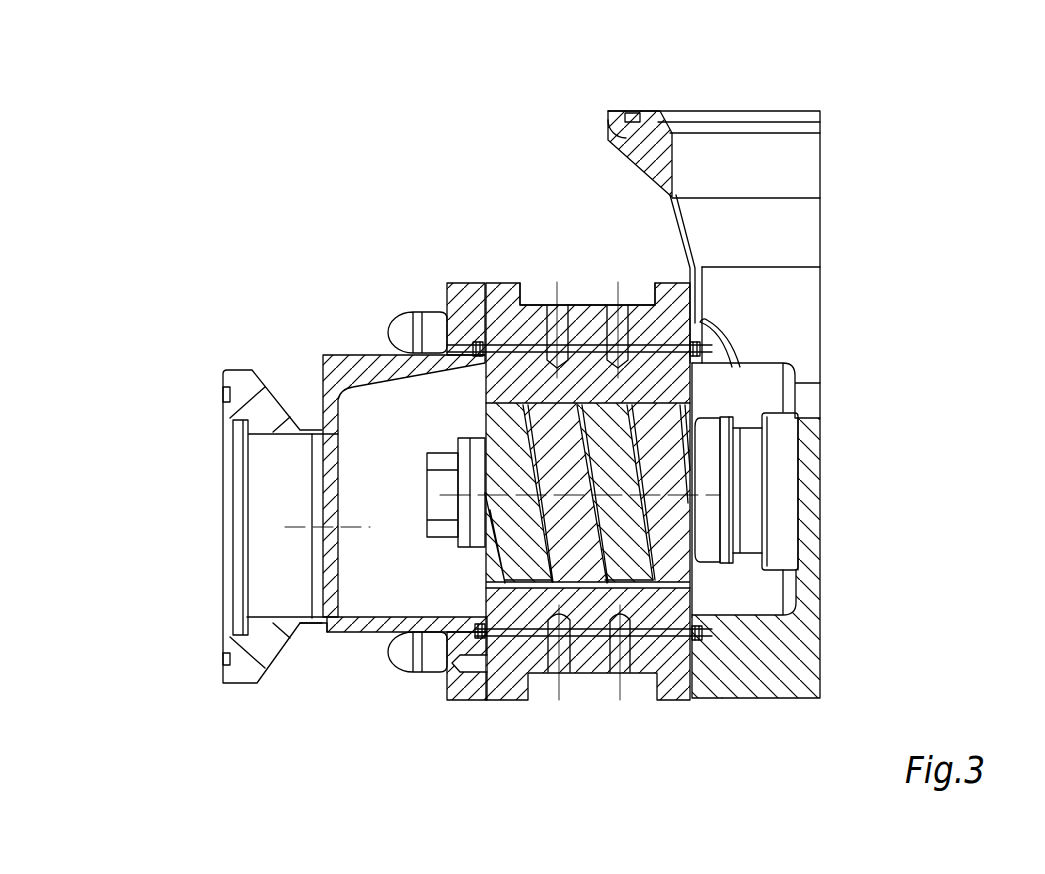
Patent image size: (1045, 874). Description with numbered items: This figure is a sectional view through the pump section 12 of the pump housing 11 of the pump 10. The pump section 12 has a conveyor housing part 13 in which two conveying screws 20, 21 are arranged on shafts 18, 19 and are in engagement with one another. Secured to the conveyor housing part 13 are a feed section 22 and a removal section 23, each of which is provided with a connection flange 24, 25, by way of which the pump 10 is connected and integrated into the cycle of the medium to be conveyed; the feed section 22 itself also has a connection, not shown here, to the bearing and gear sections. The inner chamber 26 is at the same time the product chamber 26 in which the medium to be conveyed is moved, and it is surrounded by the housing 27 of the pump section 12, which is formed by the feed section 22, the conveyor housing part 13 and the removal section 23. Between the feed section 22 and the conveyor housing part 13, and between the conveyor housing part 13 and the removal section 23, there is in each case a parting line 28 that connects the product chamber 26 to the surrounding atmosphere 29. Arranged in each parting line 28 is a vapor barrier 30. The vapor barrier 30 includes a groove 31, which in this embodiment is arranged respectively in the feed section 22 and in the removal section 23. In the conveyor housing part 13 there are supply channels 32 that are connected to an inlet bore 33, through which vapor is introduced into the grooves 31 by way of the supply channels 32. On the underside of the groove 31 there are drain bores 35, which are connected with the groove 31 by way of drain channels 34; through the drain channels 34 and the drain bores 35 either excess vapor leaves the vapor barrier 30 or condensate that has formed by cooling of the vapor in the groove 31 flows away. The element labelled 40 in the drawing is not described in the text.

The pump 10 is at (1017, 62).
The pump housing 11 is at (580, 429).
The pump section 12 is at (548, 214).
The conveyor housing part 13 is at (583, 745).
The shaft 18 is at (416, 514).
The shaft 19 is at (471, 492).
The conveying screw 20 is at (525, 520).
The conveying screw 21 is at (495, 538).
The feed section 22 is at (777, 82).
The removal section 23 is at (311, 323).
The connection flange 24 is at (608, 120).
The connection flange 25 is at (242, 387).
The inner chamber 26 is at (412, 441).
The housing 27 is at (668, 718).
The parting line 28 is at (477, 703).
The surrounding atmosphere 29 is at (228, 121).
The vapor barrier 30 is at (471, 323).
The groove 31 is at (474, 336).
The supply channel 32 is at (525, 303).
The inlet bore 33 is at (618, 303).
The drain channel 34 is at (520, 600).
The drain bore 35 is at (577, 680).
The tensioning nut 40 is at (716, 633).